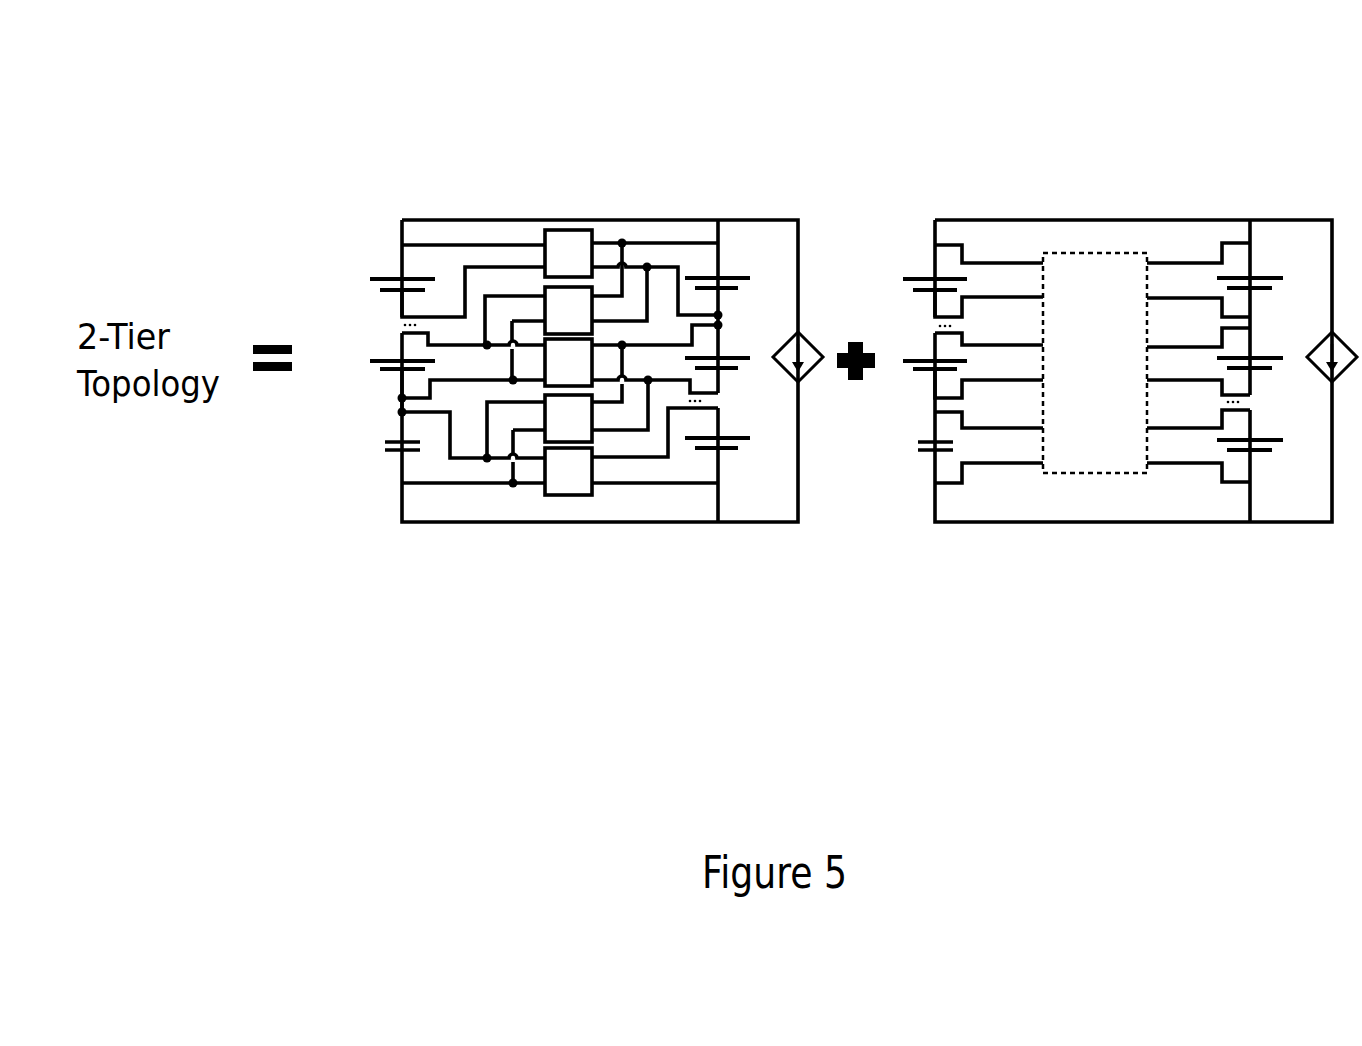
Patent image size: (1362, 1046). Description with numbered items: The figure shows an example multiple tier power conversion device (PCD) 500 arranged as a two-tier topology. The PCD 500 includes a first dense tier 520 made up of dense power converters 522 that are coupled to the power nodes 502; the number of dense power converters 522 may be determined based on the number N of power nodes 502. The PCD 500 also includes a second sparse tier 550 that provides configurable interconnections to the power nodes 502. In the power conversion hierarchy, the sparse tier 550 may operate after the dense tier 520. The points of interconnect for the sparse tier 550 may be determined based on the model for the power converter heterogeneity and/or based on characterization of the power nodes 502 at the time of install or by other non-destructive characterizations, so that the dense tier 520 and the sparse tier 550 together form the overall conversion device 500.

The multiple tier power conversion device 500 is at (484, 69).
The power node 502 is at (828, 366).
The first dense tier 520 is at (574, 194).
The dense power converter 522 is at (568, 362).
The second sparse tier 550 is at (1092, 194).